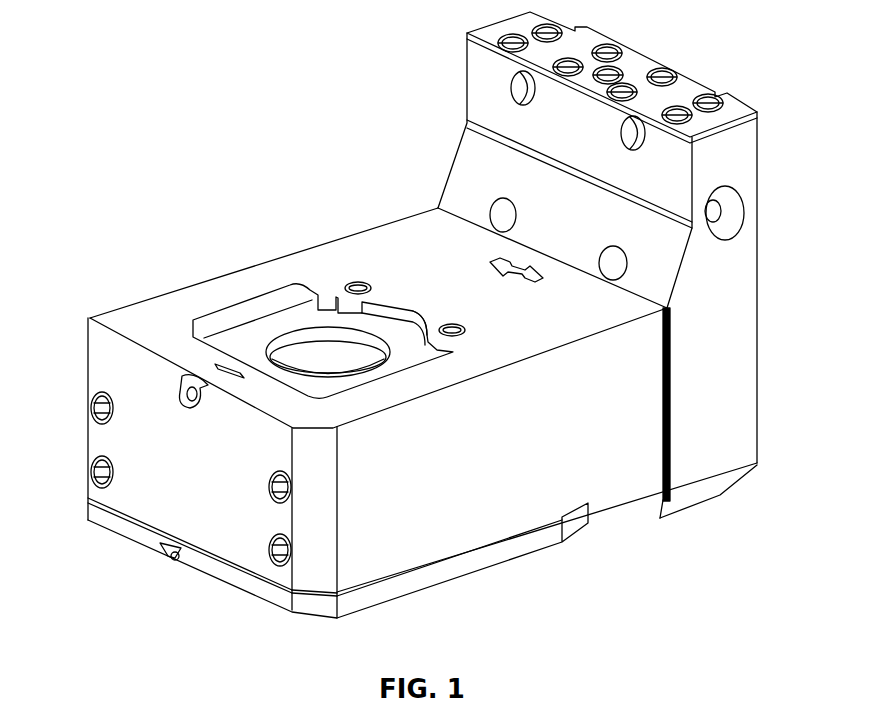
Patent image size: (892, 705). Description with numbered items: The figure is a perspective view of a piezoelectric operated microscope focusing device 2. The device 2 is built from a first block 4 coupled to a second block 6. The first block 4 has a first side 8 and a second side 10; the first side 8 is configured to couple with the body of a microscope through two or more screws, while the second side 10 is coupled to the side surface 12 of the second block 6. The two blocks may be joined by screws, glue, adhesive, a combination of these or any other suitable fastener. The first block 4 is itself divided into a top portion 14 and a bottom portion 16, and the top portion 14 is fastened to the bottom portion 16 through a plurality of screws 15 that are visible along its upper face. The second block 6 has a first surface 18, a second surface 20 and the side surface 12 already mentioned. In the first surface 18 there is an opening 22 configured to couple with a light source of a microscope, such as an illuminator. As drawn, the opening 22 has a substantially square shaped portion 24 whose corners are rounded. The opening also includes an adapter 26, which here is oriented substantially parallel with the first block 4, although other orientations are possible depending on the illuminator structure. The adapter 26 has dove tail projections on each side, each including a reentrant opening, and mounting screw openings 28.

The piezoelectric operated microscope focusing device 2 is at (265, 119).
The first block 4 is at (752, 347).
The second block 6 is at (620, 498).
The first side 8 is at (757, 232).
The second side 10 is at (463, 163).
The side surface 12 is at (670, 472).
The top portion 14 is at (478, 72).
The screws 15 is at (662, 71).
The bottom portion 16 is at (465, 147).
The first surface 18 is at (327, 250).
The second surface 20 is at (595, 527).
The opening 22 is at (243, 310).
The substantially square shaped portion 24 is at (353, 388).
The adapter 26 is at (408, 313).
The mounting screw openings 28 is at (358, 285).